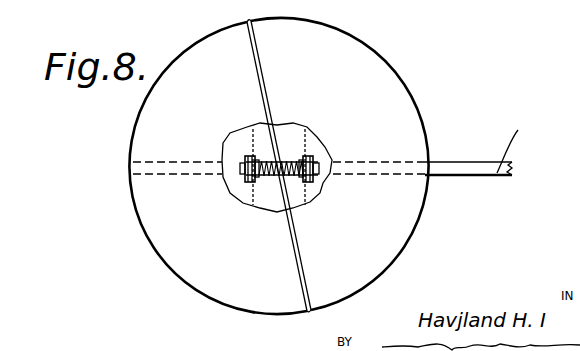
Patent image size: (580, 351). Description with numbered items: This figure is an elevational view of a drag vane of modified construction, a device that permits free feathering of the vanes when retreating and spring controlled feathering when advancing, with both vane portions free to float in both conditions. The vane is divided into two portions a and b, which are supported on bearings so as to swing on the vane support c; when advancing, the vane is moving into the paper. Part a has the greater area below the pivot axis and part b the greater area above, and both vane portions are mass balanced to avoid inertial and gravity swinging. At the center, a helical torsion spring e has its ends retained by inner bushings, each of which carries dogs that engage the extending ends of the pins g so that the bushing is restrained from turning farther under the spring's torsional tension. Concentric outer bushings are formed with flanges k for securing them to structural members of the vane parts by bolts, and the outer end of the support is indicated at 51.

The vane portion a is at (237, 293).
The vane portion b is at (373, 265).
The vane support c is at (462, 167).
The spring e is at (284, 163).
The pin g is at (251, 173).
The flange k is at (251, 157).
The shaft end 51 is at (519, 142).